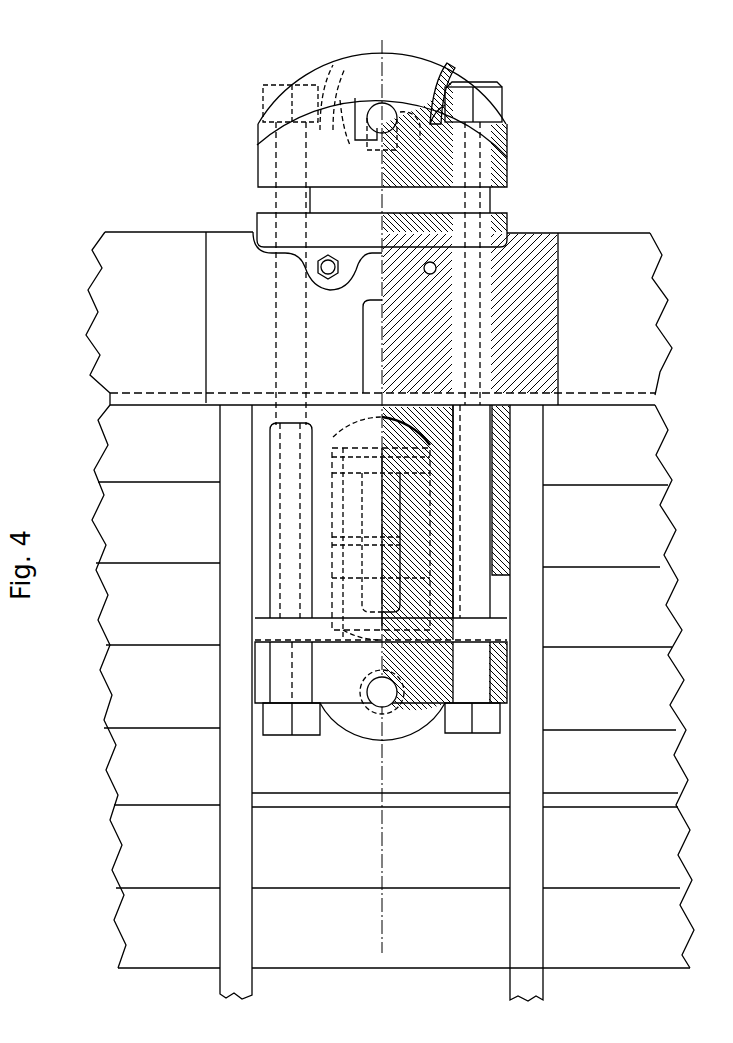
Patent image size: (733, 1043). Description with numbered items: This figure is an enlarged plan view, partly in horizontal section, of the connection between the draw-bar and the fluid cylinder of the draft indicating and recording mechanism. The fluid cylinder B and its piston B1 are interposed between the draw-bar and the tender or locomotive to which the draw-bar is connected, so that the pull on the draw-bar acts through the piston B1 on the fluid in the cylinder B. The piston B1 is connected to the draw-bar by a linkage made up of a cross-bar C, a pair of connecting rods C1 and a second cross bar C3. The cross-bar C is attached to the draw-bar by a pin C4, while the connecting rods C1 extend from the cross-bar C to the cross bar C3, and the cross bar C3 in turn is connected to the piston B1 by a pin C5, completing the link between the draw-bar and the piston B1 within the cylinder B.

The fluid cylinder B is at (258, 462).
The piston B1 is at (376, 434).
The cross-bar C is at (507, 157).
The connecting rods C1 is at (381, 428).
The cross bar C3 is at (382, 572).
The pin C4 is at (374, 112).
The pin C5 is at (373, 693).